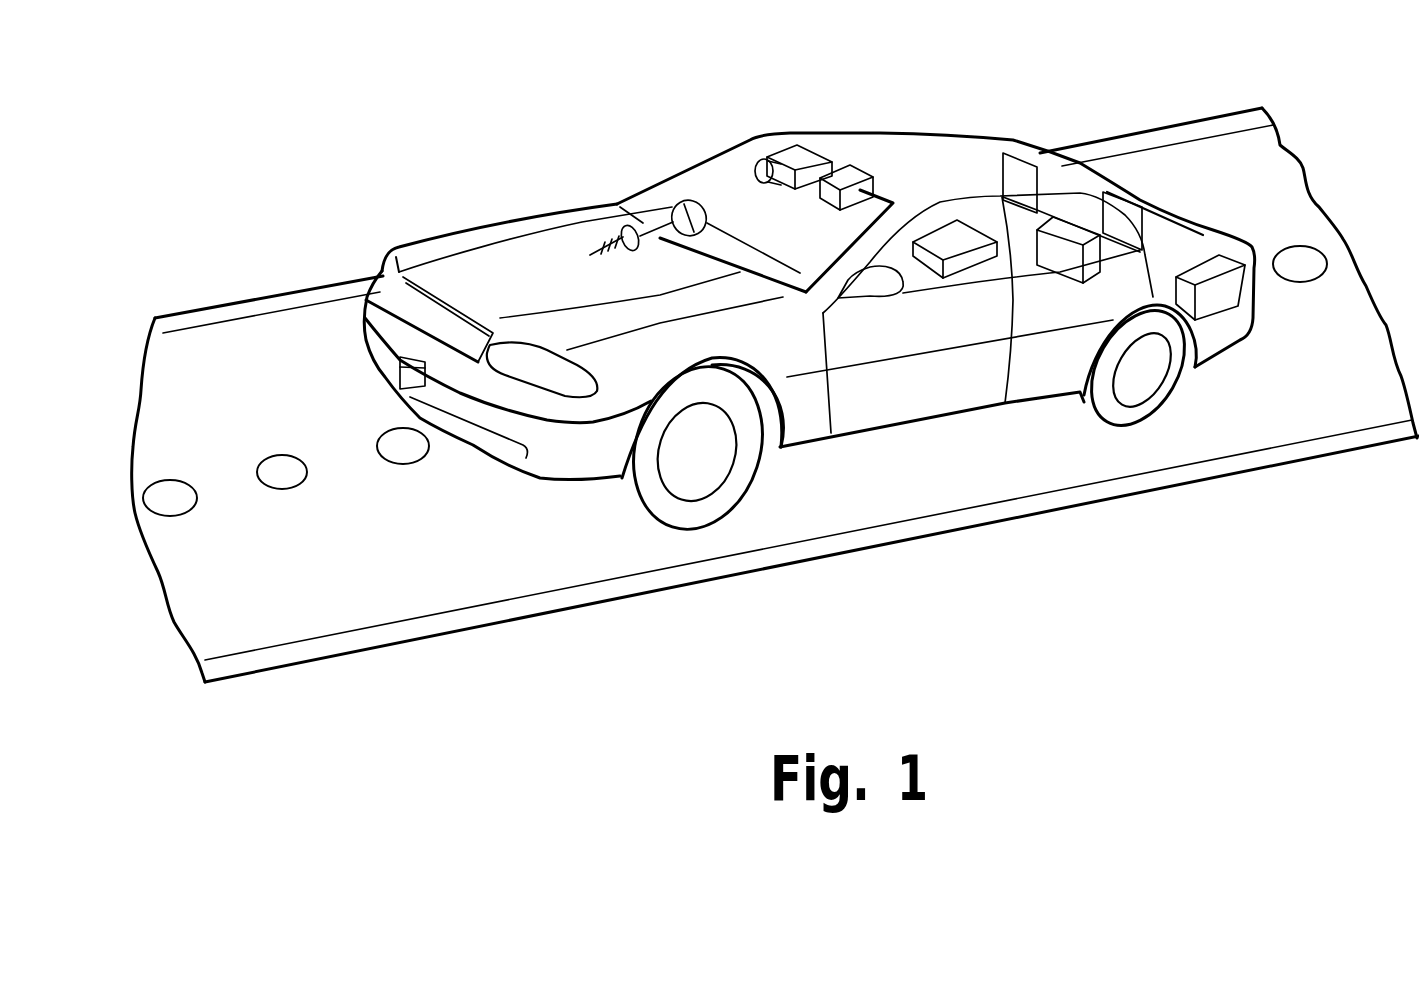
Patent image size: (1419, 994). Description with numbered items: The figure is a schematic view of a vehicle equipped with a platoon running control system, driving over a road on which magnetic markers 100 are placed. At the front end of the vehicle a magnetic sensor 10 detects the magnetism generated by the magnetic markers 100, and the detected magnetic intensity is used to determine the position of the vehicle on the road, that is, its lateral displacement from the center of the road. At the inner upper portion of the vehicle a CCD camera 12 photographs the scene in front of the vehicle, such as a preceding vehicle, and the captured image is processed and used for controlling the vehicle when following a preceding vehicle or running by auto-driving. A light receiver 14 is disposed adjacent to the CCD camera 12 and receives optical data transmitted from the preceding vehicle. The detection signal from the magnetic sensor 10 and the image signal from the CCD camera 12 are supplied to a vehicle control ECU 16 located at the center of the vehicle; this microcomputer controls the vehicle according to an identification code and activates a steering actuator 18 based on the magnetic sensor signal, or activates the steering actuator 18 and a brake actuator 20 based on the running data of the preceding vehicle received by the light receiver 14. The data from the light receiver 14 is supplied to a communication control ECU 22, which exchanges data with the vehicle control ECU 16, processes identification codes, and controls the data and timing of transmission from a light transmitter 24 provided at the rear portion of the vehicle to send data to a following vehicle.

The magnetic sensor 10 is at (398, 372).
The CCD camera 12 is at (811, 149).
The light receiver 14 is at (873, 176).
The vehicle control ECU 16 is at (960, 232).
The steering actuator 18 is at (603, 216).
The brake actuator 20 is at (1226, 258).
The communication control ECU 22 is at (1072, 283).
The light transmitter 24 is at (1023, 157).
The magnetic markers 100 is at (436, 474).